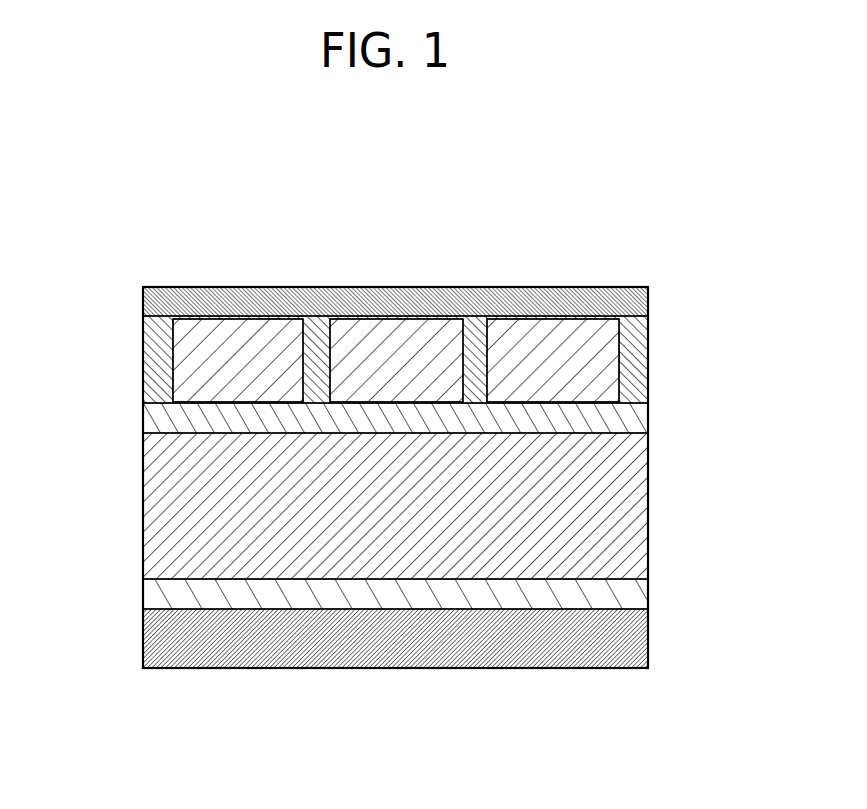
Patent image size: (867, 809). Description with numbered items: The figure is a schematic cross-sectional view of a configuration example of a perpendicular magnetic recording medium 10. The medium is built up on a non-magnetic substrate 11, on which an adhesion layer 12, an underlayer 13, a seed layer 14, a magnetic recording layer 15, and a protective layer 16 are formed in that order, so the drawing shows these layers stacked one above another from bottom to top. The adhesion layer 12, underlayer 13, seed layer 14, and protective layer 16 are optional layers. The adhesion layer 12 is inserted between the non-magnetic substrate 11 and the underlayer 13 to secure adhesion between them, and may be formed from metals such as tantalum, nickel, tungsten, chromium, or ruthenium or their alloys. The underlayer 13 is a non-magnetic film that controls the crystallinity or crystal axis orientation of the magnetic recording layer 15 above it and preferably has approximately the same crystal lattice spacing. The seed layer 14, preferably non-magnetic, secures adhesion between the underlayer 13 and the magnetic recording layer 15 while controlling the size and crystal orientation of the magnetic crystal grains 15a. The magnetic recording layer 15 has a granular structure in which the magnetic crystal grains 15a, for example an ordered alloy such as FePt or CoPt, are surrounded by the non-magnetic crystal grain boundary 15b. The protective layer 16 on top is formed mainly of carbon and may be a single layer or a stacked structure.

The perpendicular magnetic recording medium 10 is at (395, 399).
The non-magnetic substrate 11 is at (143, 648).
The adhesion layer 12 is at (143, 600).
The underlayer 13 is at (143, 510).
The seed layer 14 is at (143, 424).
The magnetic recording layer 15 is at (395, 359).
The magnetic crystal grains 15a is at (610, 343).
The non-magnetic crystal grain boundary 15b is at (636, 380).
The protective layer 16 is at (143, 313).